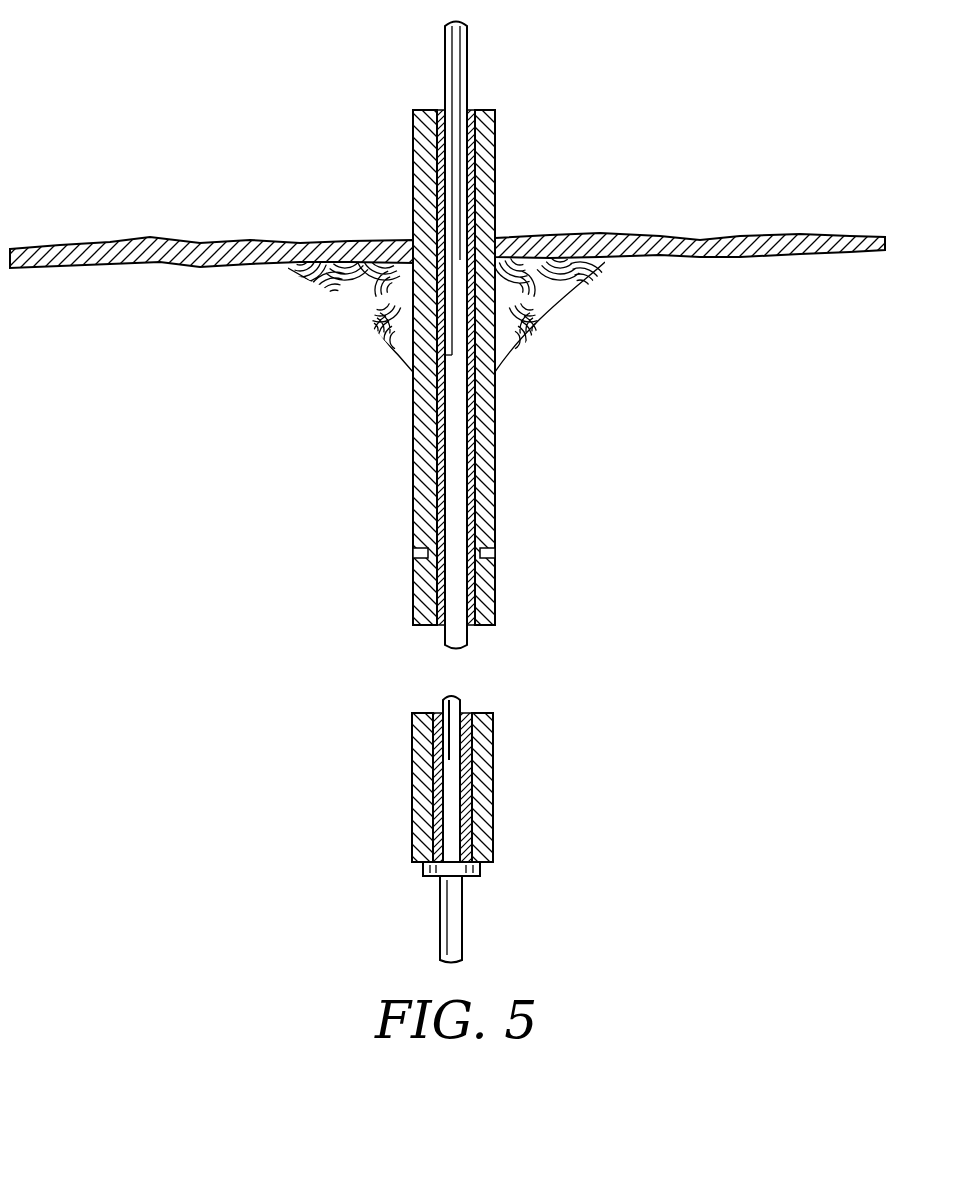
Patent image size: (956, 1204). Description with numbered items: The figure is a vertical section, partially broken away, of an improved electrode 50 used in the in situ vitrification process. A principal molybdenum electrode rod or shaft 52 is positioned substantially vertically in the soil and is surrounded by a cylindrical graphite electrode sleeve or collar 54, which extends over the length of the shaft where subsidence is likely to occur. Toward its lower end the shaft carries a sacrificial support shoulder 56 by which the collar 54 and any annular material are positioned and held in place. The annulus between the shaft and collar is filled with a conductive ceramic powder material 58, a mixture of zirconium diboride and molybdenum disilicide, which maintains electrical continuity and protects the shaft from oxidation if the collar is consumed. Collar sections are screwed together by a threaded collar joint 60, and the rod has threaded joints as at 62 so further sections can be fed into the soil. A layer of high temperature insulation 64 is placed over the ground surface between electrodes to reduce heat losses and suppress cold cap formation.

The anchor assembly 50 is at (572, 151).
The electrode rod or shaft 52 is at (462, 62).
The electrode sleeve or collar 54 is at (416, 430).
The sacrificial support shoulder 56 is at (480, 868).
The ceramic powder material 58 is at (470, 219).
The threaded collar joint 60 is at (495, 552).
The threaded joint 62 is at (458, 352).
The insulation layer 64 is at (735, 237).